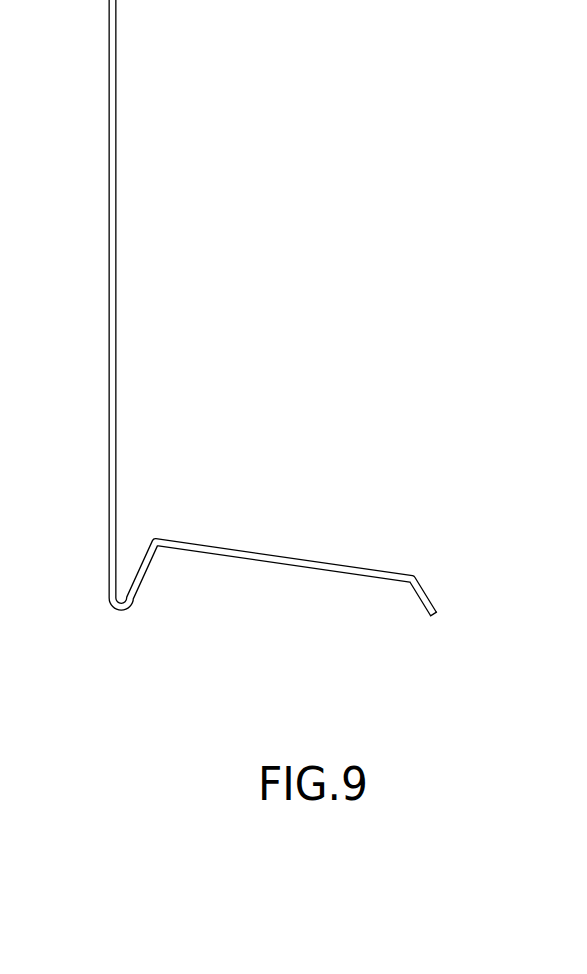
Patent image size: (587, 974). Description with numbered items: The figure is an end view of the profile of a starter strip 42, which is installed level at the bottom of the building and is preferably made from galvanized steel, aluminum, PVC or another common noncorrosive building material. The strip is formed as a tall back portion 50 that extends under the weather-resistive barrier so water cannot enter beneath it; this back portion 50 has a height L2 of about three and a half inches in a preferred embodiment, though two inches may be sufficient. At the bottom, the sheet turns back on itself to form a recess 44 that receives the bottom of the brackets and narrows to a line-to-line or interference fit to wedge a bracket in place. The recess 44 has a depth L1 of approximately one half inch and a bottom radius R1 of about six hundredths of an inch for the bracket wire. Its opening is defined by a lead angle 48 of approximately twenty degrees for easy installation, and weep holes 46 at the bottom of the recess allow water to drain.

The starter strip 42 is at (150, 356).
The recess 44 is at (128, 562).
The weep holes 46 is at (128, 634).
The lead angle 48 is at (153, 535).
The back portion 50 is at (119, 87).
The depth of recess L1 is at (160, 536).
The height of back portion L2 is at (45, 618).
The bottom radius of recess R1 is at (127, 620).